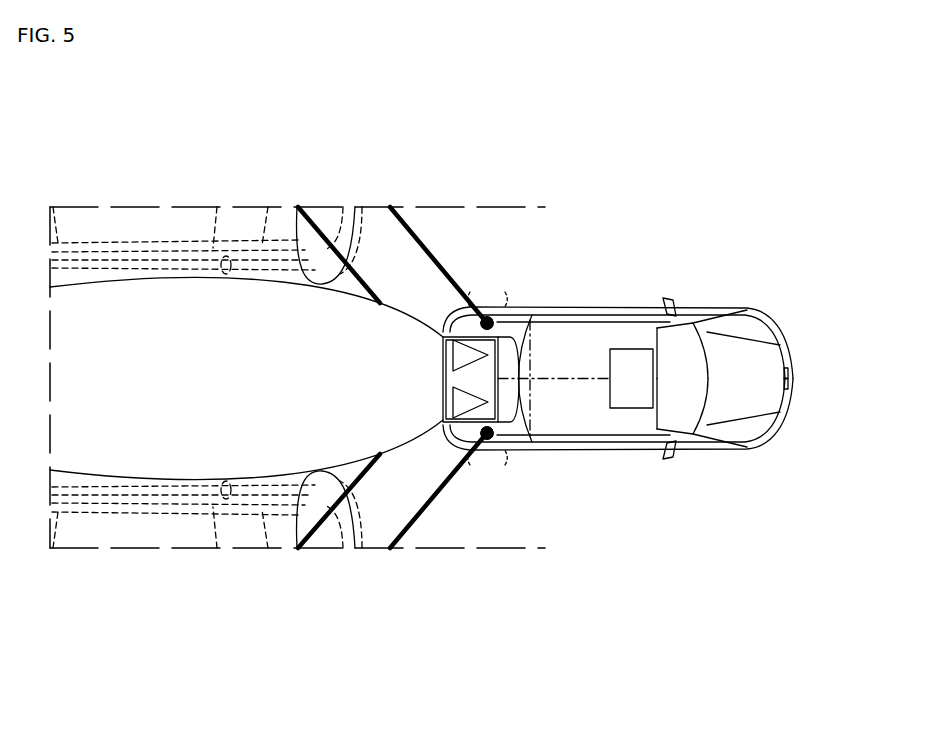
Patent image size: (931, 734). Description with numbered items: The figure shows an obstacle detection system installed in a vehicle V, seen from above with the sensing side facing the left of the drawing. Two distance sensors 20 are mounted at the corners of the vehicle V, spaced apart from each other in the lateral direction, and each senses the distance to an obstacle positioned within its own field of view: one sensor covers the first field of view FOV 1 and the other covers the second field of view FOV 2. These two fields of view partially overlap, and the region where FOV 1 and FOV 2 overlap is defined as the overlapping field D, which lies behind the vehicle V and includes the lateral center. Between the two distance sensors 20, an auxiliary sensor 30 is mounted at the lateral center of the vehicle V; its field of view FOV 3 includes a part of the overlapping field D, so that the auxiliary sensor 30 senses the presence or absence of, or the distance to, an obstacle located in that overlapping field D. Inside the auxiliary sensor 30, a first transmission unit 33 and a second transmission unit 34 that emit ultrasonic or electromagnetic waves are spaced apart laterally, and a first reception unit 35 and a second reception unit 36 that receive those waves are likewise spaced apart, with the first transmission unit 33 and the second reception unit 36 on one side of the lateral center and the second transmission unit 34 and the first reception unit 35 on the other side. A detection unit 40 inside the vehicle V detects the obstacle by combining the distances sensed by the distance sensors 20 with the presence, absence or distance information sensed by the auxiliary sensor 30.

The vehicle V is at (787, 345).
The second distance sensor 20 is at (490, 316).
The auxiliary sensor 30 is at (523, 370).
The first transmission unit 33 is at (488, 316).
The first reception unit 35 is at (487, 323).
The second transmission unit 34 is at (463, 437).
The second reception unit 36 is at (487, 433).
The detection unit 40 is at (653, 378).
The overlapping field D is at (298, 207).
The first field of view FOV 1 is at (430, 207).
The second field of view FOV 2 is at (422, 527).
The field of view of the auxiliary sensor FOV 3 is at (388, 452).